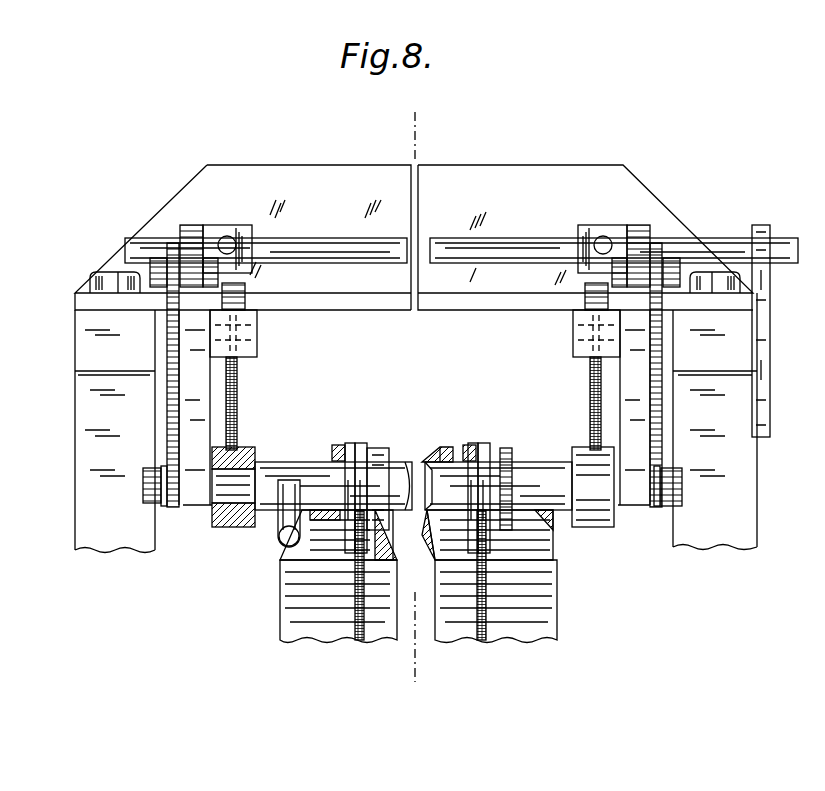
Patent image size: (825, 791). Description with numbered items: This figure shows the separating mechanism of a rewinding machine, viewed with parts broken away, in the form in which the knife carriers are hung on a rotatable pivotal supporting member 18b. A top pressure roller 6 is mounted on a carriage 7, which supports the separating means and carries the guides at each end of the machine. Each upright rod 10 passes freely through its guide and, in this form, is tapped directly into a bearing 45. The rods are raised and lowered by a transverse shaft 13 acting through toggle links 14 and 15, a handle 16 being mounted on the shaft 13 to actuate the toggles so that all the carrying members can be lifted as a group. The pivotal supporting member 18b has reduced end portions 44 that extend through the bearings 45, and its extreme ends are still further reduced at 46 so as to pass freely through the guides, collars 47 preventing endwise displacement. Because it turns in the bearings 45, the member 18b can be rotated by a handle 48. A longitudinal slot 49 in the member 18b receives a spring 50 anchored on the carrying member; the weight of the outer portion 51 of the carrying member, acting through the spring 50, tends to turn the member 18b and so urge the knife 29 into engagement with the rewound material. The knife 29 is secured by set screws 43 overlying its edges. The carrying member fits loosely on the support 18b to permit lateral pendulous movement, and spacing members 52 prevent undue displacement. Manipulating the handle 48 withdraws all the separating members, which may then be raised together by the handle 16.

The top pressure roller 6 is at (548, 543).
The carriage 7 is at (497, 131).
The upright rod 10 is at (238, 372).
The transverse shaft 13 is at (325, 240).
The toggle link 14 is at (170, 339).
The toggle link 15 is at (415, 256).
The handle 16 is at (772, 370).
The pivotal supporting member 18b is at (545, 462).
The knife 29 is at (366, 618).
The set screw 43 is at (494, 560).
The reduced end portion 44 is at (258, 466).
The bearing 45 is at (246, 455).
The further reduced end 46 is at (145, 500).
The collar 47 is at (165, 510).
The handle 48 is at (293, 480).
The longitudinal slot 49 is at (447, 460).
The spring 50 is at (386, 460).
The outer portion of carrying member 51 is at (360, 535).
The spacing member 52 is at (362, 445).